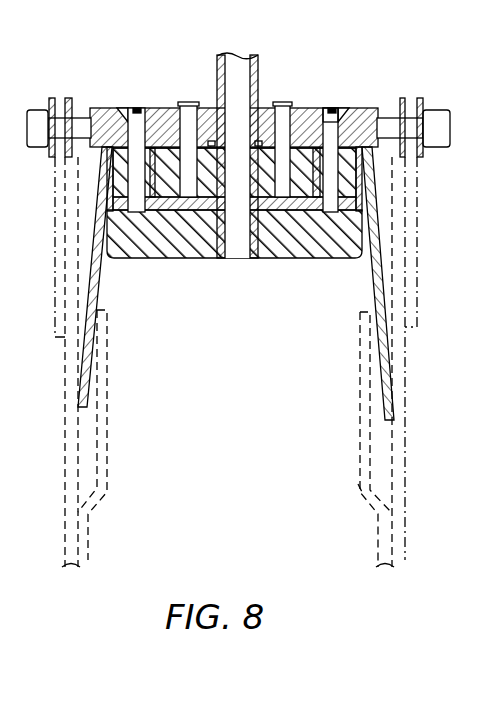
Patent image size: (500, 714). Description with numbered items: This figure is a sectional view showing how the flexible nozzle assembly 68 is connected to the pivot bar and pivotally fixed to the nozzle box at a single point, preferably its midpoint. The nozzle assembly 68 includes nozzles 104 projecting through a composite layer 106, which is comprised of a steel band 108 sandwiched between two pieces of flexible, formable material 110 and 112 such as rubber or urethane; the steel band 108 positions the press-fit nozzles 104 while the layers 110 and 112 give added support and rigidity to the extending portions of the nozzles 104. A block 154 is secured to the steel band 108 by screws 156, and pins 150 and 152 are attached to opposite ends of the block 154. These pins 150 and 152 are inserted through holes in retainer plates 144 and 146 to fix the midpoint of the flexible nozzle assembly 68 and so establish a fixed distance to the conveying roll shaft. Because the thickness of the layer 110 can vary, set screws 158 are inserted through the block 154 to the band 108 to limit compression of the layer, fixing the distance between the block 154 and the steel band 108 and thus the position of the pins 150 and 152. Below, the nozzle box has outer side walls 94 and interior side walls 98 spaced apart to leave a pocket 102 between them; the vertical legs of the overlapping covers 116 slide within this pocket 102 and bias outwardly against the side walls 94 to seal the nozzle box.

The flexible nozzle assembly 68 is at (142, 62).
The side walls 94 is at (405, 353).
The interior side walls 98 is at (358, 486).
The pocket 102 is at (373, 457).
The nozzles 104 is at (259, 67).
The composite layer 106 is at (300, 295).
The steel band 108 is at (173, 205).
The flexible, formable material 110 is at (307, 175).
The flexible, formable material 112 is at (148, 250).
The overlapping covers 116 is at (378, 253).
The retainer plate 144 is at (418, 193).
The retainer plate 146 is at (54, 210).
The pin 150 is at (433, 109).
The pin 152 is at (38, 109).
The block 154 is at (368, 108).
The screws 156 is at (336, 108).
The set screws 158 is at (282, 102).